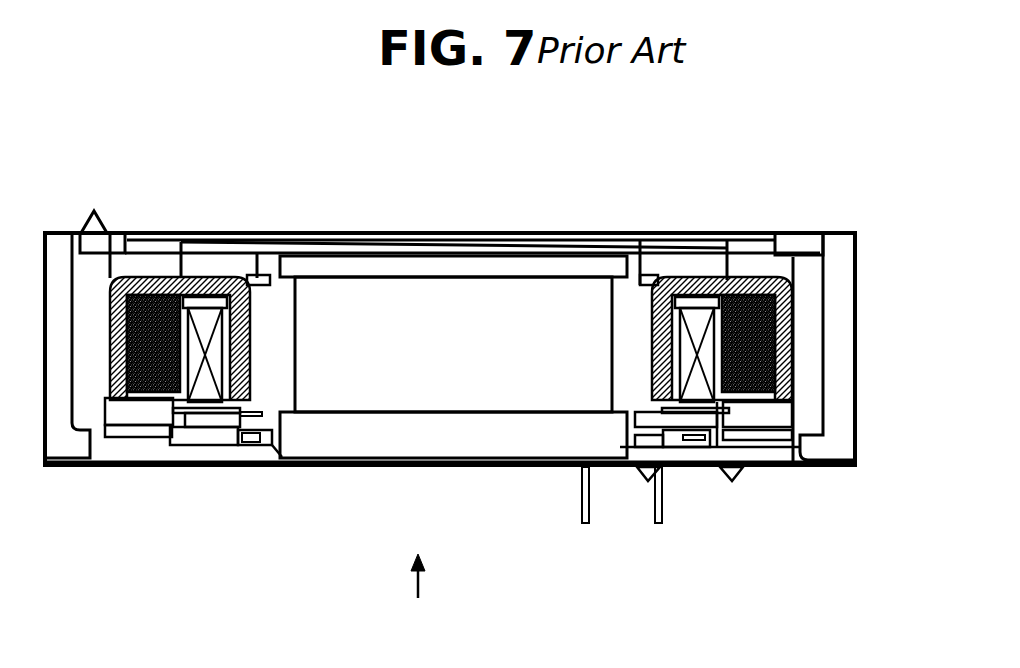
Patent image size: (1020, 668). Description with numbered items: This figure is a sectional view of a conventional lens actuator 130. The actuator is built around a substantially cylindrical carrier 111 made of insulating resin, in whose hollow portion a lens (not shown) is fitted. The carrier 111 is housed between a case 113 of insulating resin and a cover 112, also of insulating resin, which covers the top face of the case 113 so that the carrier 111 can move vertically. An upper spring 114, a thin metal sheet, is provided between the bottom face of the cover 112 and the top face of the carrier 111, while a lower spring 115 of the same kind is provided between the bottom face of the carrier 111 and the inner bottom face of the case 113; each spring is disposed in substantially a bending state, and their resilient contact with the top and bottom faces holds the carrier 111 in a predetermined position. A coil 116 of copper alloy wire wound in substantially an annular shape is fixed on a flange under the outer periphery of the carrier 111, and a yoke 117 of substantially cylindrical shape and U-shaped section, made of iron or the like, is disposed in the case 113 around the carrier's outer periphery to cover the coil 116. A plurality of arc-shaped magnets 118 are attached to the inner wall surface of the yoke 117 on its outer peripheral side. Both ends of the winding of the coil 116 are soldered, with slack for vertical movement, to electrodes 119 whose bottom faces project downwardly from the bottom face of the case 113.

The carrier 111 is at (437, 297).
The cover 112 is at (837, 270).
The case 113 is at (778, 460).
The upper spring 114 is at (260, 258).
The lower spring 115 is at (248, 445).
The coil 116 is at (793, 382).
The yoke 117 is at (793, 315).
The magnets 118 is at (793, 353).
The electrodes 119 is at (662, 541).
The lens actuator 130 is at (413, 593).